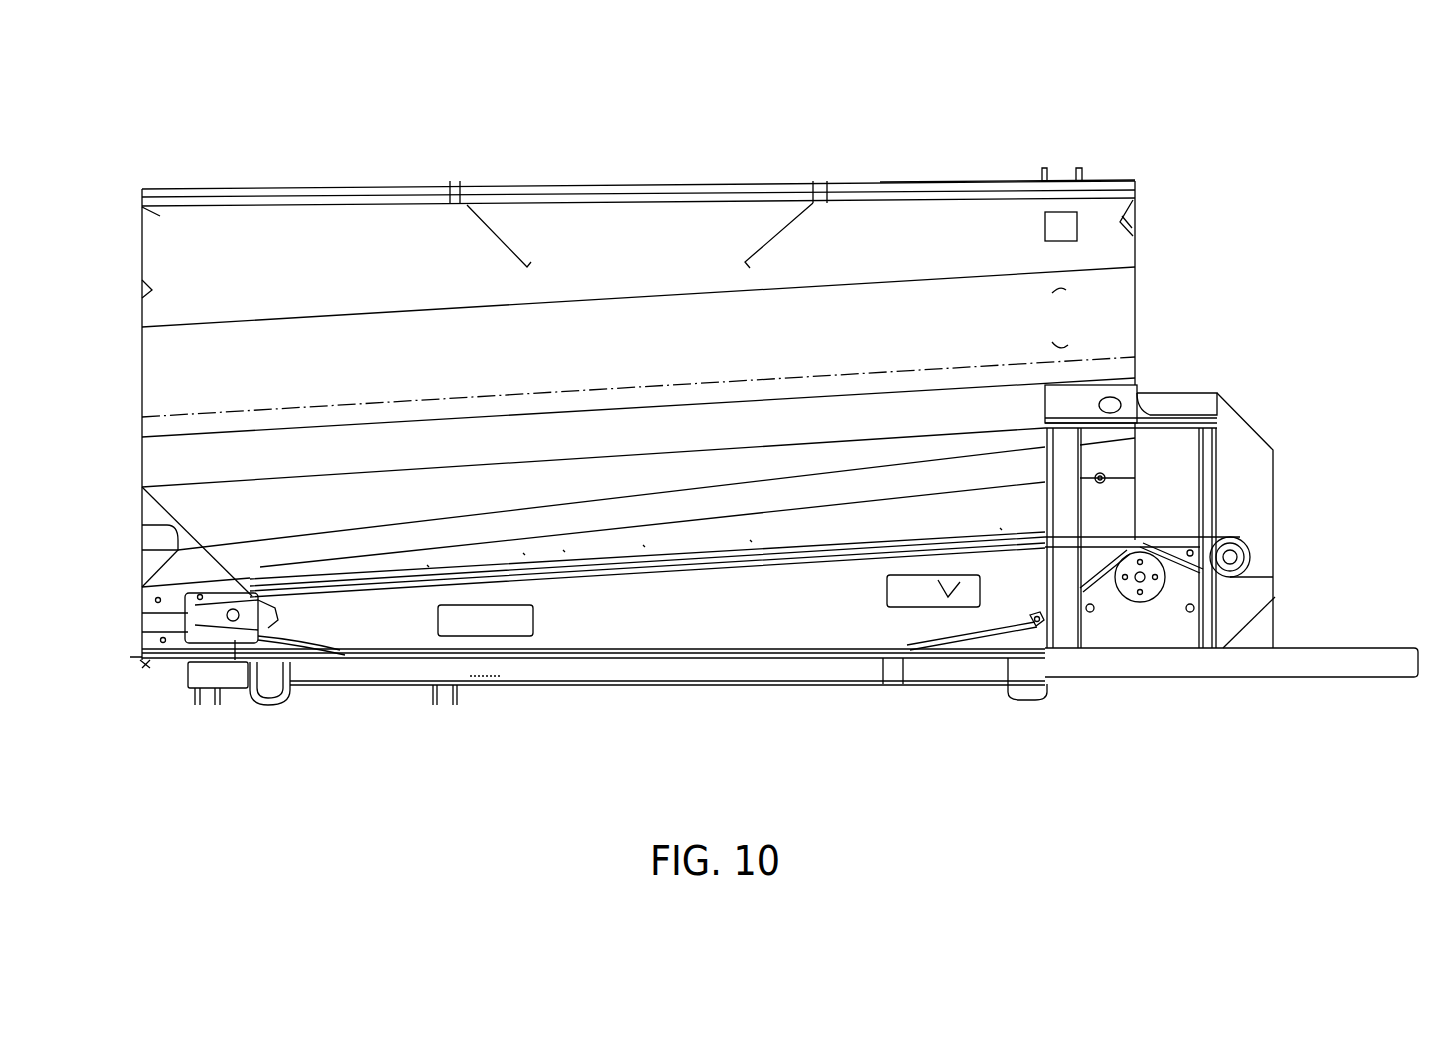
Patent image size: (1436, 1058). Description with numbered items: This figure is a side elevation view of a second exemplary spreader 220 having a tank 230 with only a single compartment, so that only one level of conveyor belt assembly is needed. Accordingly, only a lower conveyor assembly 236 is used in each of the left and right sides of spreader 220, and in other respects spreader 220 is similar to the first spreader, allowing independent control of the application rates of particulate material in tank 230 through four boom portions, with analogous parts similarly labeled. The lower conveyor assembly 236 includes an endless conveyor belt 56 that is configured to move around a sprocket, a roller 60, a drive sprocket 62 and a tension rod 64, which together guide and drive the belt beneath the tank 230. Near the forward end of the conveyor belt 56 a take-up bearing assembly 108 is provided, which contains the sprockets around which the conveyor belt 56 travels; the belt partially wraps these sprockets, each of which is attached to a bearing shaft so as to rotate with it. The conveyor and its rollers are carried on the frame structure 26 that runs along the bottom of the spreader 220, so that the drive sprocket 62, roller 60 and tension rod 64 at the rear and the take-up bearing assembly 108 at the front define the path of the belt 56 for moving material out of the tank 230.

The spreader 220 is at (809, 90).
The tank 230 is at (915, 227).
The endless conveyor belt 56 is at (1172, 537).
The lower conveyor assembly 236 is at (1242, 538).
The roller 60 is at (1250, 555).
The drive sprocket 62 is at (1152, 595).
The tension rod 64 is at (1027, 635).
The frame rail 26 is at (800, 668).
The take-up bearing assembly 108 is at (238, 670).